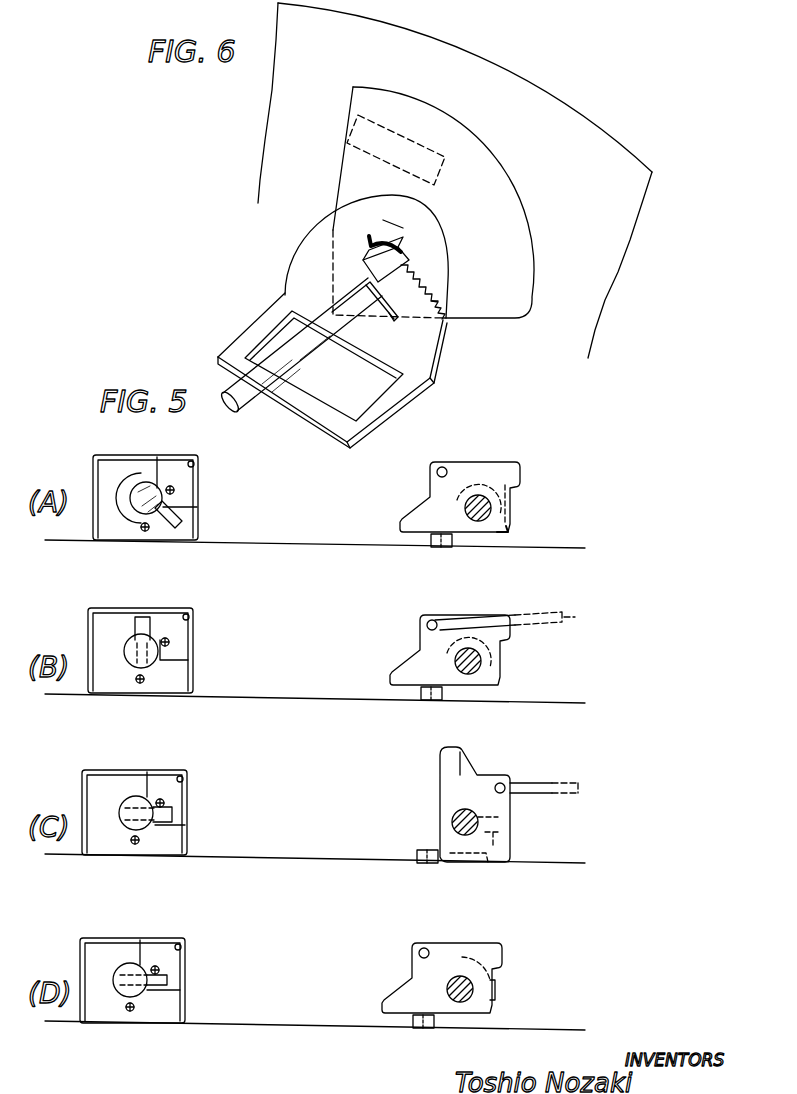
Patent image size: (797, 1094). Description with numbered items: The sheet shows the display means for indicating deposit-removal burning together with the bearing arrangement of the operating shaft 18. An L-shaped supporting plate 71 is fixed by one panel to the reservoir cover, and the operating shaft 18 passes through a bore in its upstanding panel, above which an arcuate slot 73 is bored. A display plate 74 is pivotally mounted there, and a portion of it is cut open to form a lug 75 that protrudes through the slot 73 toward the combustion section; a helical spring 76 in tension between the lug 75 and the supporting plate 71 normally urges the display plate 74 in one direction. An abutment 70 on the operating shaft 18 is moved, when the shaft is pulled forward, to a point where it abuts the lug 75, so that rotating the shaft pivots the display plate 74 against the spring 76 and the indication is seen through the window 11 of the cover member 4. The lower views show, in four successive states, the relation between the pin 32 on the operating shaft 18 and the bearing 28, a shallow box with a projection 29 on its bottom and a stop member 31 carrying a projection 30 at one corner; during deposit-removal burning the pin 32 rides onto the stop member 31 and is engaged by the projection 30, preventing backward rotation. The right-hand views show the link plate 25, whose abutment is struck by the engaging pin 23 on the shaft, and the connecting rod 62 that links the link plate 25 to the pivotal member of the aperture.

In FIG. 6, the cover member 4 is at (587, 122).
In FIG. 6, the window 11 is at (396, 130).
In FIG. 6, the operating shaft 18 is at (253, 397).
In FIG. 5, the operating shaft 18 is at (148, 482).
In FIG. 5, the engaging pin 23 is at (509, 526).
In FIG. 5, the link plate 25 is at (473, 489).
In FIG. 5, the bearing 28 is at (320, 499).
In FIG. 5, the projection 29 is at (148, 532).
In FIG. 5, the projection 30 is at (176, 492).
In FIG. 5, the stop member 31 is at (196, 475).
In FIG. 5, the pin 32 is at (180, 531).
In FIG. 5, the connecting rod 62 is at (523, 623).
In FIG. 6, the abutment 70 is at (385, 313).
In FIG. 6, the L-shaped supporting plate 71 is at (403, 390).
In FIG. 6, the arcuate slot 73 is at (368, 236).
In FIG. 6, the display plate 74 is at (473, 313).
In FIG. 6, the lug 75 is at (401, 253).
In FIG. 6, the helical spring 76 is at (437, 283).